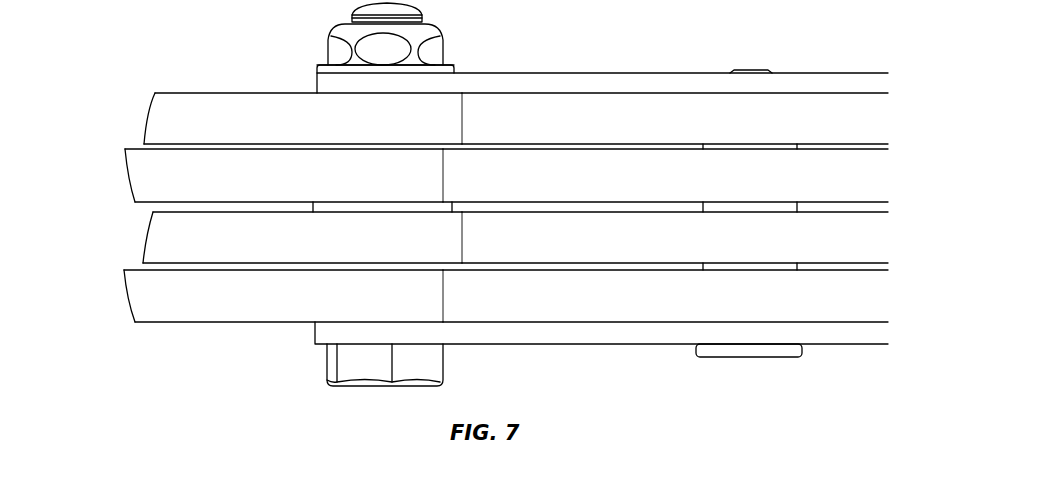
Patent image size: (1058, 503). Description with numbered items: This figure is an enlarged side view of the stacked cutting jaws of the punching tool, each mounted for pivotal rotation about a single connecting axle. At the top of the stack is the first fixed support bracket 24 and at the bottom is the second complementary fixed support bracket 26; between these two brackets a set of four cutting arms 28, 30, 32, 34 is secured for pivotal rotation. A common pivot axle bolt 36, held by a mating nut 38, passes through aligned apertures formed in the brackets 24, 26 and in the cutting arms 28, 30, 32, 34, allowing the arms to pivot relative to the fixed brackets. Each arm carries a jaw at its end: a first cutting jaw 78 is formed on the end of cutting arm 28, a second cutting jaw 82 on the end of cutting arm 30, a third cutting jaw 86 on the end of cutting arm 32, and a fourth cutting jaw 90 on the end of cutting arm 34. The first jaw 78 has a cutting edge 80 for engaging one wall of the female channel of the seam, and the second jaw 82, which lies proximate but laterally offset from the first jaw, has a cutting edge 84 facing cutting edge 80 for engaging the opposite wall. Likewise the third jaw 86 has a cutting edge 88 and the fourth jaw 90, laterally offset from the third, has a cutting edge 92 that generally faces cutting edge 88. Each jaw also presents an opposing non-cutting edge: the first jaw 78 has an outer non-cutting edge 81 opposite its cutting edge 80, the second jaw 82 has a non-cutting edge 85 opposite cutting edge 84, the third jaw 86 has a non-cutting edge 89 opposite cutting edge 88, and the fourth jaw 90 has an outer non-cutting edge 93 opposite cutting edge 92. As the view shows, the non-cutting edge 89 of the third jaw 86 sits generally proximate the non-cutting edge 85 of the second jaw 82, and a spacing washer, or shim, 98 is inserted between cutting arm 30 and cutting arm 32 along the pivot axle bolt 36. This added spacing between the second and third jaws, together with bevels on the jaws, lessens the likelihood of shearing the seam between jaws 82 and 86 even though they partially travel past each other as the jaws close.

The first fixed support bracket 24 is at (571, 82).
The second complementary fixed support bracket 26 is at (553, 339).
The cutting arm 28 is at (783, 104).
The cutting arm 30 is at (663, 160).
The cutting arm 32 is at (637, 255).
The cutting arm 34 is at (803, 311).
The common pivot axle bolt 36 is at (327, 357).
The mating nut 38 is at (438, 45).
The first cutting jaw 78 is at (486, 94).
The cutting edge 80 is at (144, 144).
The outer non-cutting edge 81 is at (155, 93).
The second cutting jaw 82 is at (471, 126).
The cutting edge 84 is at (125, 149).
The non-cutting edge 85 is at (135, 202).
The third cutting jaw 86 is at (475, 288).
The cutting edge 88 is at (143, 263).
The non-cutting edge 89 is at (153, 212).
The fourth cutting jaw 90 is at (464, 316).
The cutting edge 92 is at (124, 270).
The outer non-cutting edge 93 is at (135, 322).
The spacing washer 98 is at (343, 202).